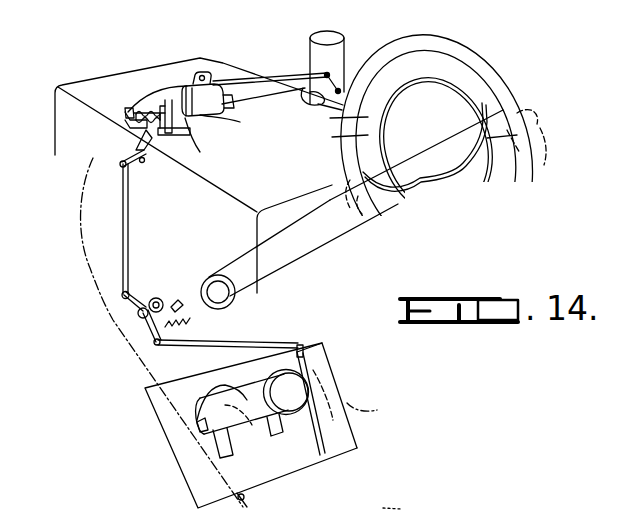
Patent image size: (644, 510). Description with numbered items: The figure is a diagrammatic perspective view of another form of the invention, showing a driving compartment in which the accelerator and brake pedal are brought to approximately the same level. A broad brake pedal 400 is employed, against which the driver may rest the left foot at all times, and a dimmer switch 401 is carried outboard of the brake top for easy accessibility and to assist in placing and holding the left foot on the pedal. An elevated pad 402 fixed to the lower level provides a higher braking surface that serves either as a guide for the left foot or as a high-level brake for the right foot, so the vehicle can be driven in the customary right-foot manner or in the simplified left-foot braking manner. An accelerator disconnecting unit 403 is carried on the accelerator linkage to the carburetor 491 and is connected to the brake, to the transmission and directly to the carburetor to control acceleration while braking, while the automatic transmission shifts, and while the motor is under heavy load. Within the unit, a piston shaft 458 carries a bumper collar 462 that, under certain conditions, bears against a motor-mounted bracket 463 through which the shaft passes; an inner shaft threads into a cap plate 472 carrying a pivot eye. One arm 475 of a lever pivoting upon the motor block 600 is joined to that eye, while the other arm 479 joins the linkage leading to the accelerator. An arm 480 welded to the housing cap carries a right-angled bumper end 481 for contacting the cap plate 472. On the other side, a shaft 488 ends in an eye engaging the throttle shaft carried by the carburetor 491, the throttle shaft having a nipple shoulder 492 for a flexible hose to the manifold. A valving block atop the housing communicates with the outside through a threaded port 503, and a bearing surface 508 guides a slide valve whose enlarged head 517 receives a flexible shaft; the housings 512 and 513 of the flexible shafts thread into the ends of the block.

The brake pedal 400 is at (250, 388).
The dimmer switch 401 is at (176, 448).
The elevated pad 402 is at (313, 320).
The accelerator disconnecting unit 403 is at (220, 119).
The piston shaft 458 is at (143, 168).
The bumper collar 462 is at (127, 110).
The motor-mounted bracket 463 is at (198, 153).
The cap plate 472 is at (125, 111).
The arm of lever 475 is at (93, 160).
The arm of lever 479 is at (132, 180).
The arm 480 is at (167, 96).
The bumper end 481 is at (113, 122).
The shaft 488 is at (306, 87).
The carburetor 491 is at (345, 42).
The nipple shoulder 492 is at (270, 101).
The threaded port 503 is at (202, 76).
The bearing surface 508 is at (230, 106).
The housing of flexible shaft 512 is at (111, 318).
The housing of flexible shaft 513 is at (283, 80).
The enlarged head 517 is at (374, 503).
The motor block 600 is at (216, 230).